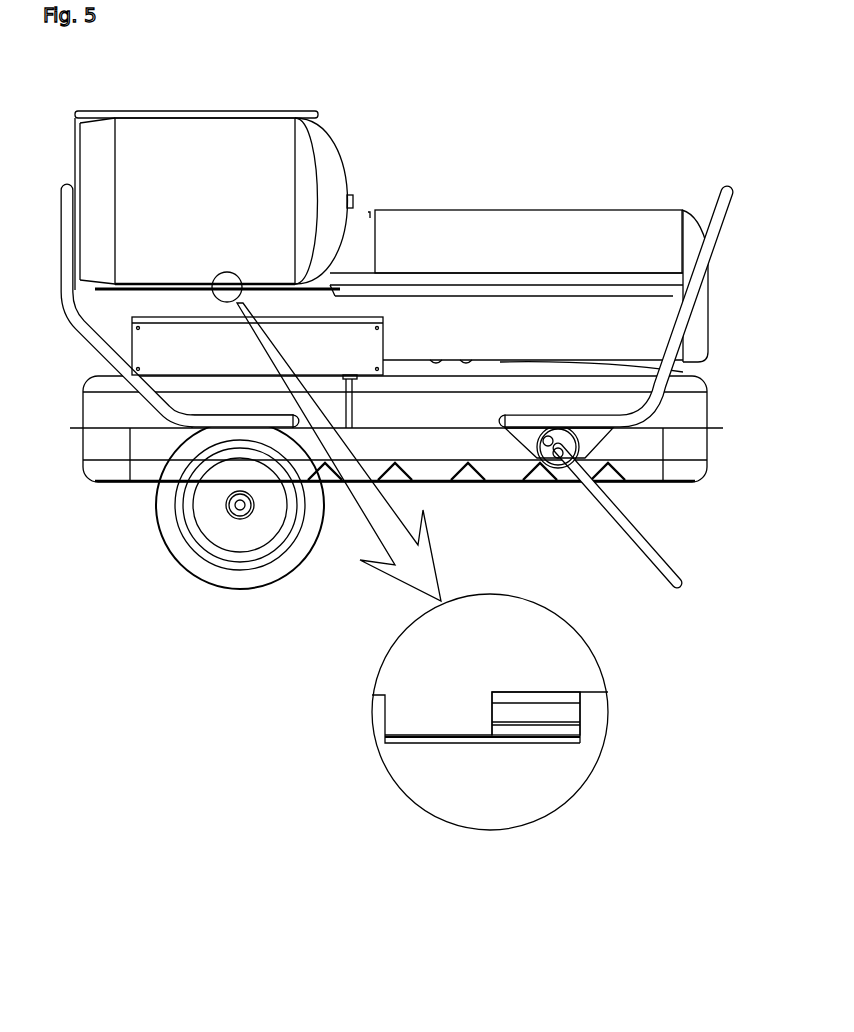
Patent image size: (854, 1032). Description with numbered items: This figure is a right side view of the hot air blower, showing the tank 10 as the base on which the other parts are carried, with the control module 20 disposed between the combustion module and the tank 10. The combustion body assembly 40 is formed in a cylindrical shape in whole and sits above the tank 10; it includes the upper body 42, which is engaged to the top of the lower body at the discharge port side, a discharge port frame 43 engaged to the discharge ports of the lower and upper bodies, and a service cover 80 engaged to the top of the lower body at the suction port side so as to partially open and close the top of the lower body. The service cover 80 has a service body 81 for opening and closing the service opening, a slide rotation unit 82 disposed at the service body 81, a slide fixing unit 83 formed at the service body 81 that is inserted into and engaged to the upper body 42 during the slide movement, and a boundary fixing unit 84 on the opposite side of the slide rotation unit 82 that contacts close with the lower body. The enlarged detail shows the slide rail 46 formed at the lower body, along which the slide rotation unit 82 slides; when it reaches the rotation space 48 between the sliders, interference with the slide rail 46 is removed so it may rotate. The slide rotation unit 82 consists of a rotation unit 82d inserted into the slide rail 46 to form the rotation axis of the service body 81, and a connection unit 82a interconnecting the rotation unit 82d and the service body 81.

The tank 10 is at (716, 397).
The control module 20 is at (142, 341).
The combustion body assembly 40 is at (520, 251).
The upper body 42 is at (580, 225).
The discharge port frame 43 is at (688, 210).
The slide rail 46 is at (378, 737).
The rotation space 48 is at (592, 716).
The service cover 80 is at (231, 165).
The service body 81 is at (252, 165).
The slide rotation unit 82 is at (496, 798).
The connection unit 82a is at (417, 715).
The rotation unit 82d is at (518, 724).
The slide fixing unit 83 is at (354, 196).
The boundary fixing unit 84 is at (210, 113).